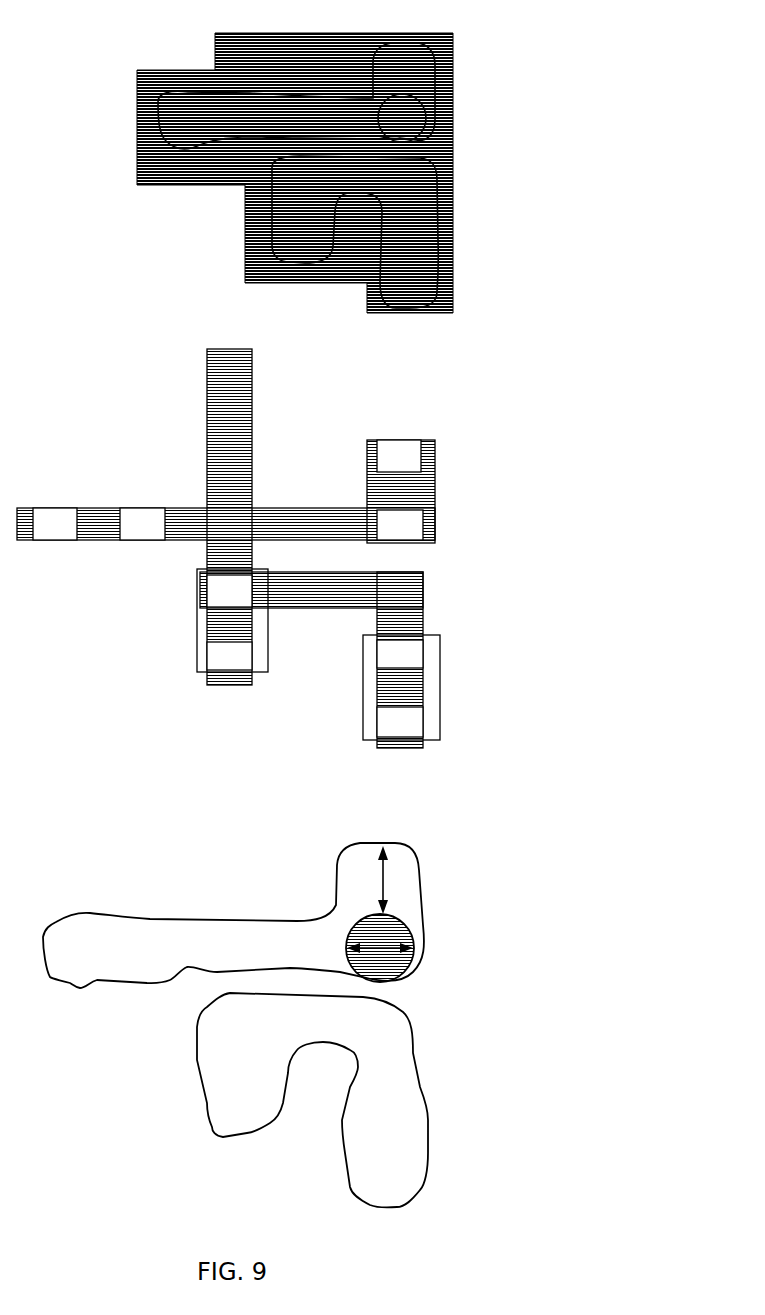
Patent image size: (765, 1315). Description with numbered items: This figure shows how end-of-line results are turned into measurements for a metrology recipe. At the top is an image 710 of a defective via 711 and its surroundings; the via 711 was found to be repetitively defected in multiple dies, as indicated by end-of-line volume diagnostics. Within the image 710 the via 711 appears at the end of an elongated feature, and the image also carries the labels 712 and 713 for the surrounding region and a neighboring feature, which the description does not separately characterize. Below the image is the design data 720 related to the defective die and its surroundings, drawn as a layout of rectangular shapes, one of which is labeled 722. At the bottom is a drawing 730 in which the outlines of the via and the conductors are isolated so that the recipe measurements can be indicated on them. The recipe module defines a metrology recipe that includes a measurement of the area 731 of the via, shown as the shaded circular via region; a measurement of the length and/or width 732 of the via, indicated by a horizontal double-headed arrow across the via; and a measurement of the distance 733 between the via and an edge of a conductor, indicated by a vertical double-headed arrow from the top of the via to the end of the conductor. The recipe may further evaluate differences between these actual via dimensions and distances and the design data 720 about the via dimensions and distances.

The image 710 is at (295, 159).
The defective via 711 is at (298, 132).
The background region of image 712 is at (295, 159).
The U-shaped pattern feature 713 is at (325, 197).
The design data 720 is at (299, 548).
The layout block / via pad 722 is at (418, 538).
The extracted contour drawing 730 is at (322, 1014).
The area of the via 731 is at (370, 915).
The length and/or width of the via 732 is at (414, 963).
The distance 733 is at (386, 885).